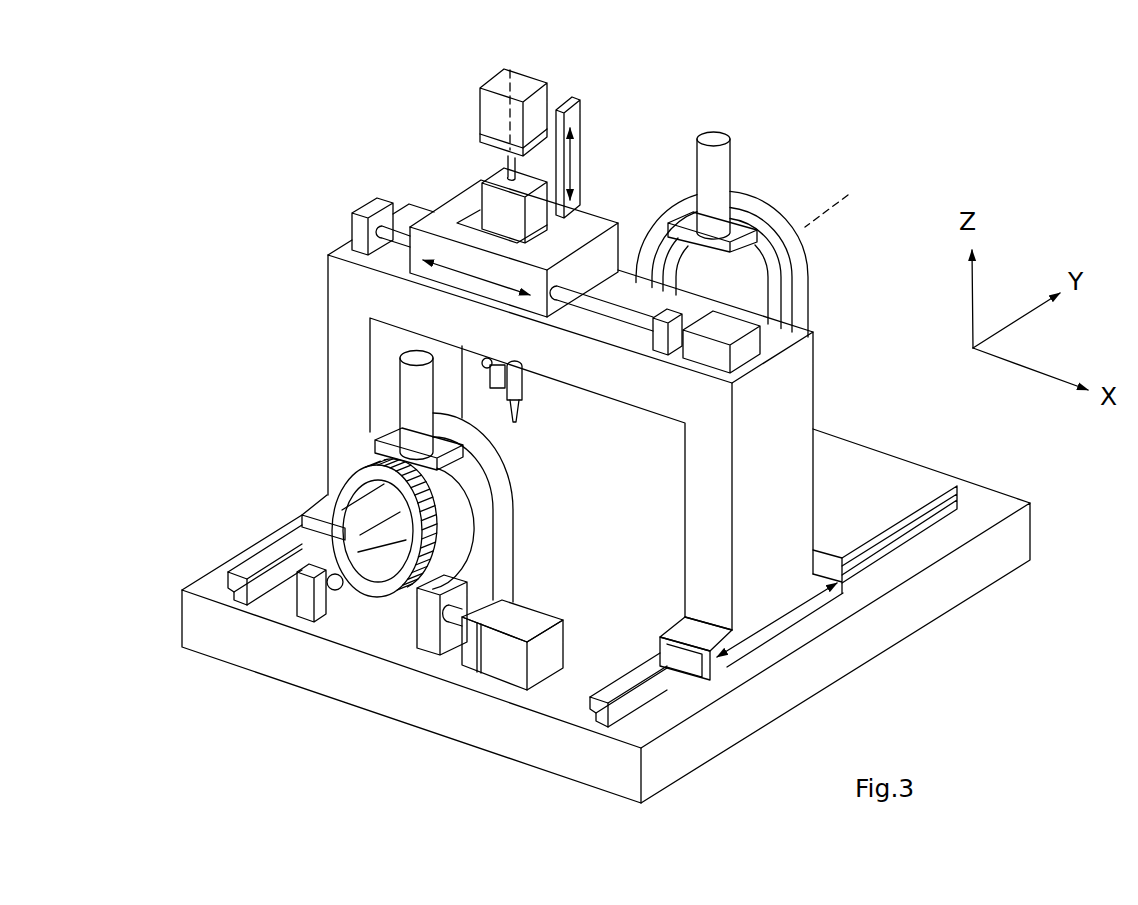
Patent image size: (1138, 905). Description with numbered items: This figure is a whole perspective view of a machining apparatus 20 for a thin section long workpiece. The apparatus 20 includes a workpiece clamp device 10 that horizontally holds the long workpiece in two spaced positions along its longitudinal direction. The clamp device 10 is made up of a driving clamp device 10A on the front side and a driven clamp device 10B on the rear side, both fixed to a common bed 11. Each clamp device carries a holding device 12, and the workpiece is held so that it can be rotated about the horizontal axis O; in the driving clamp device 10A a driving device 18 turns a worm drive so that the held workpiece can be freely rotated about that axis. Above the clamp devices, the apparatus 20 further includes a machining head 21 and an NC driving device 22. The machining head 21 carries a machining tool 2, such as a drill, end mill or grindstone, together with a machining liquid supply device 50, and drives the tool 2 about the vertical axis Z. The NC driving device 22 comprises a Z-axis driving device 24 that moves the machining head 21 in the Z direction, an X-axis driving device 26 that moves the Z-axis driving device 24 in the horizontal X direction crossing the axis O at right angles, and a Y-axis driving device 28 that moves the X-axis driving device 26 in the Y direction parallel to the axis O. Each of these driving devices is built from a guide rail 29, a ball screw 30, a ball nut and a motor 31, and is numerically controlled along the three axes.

The machining tool 2 is at (516, 425).
The workpiece clamp device 10 is at (283, 443).
The driving clamp device 10A is at (516, 535).
The driven clamp device 10B is at (792, 203).
The bed 11 is at (343, 680).
The holding device 12 is at (690, 167).
The driving device 18 is at (545, 648).
The workpiece machining apparatus 20 is at (302, 132).
The machining head 21 is at (522, 388).
The NC driving device 22 is at (312, 233).
The Z-axis driving device 24 is at (467, 120).
The X-axis driving device 26 is at (745, 340).
The Y-axis driving device 28 is at (862, 581).
The guide rail 29 is at (257, 560).
The ball screw 30 is at (615, 305).
The motor 31 is at (535, 107).
The machining liquid supply device 50 is at (488, 364).